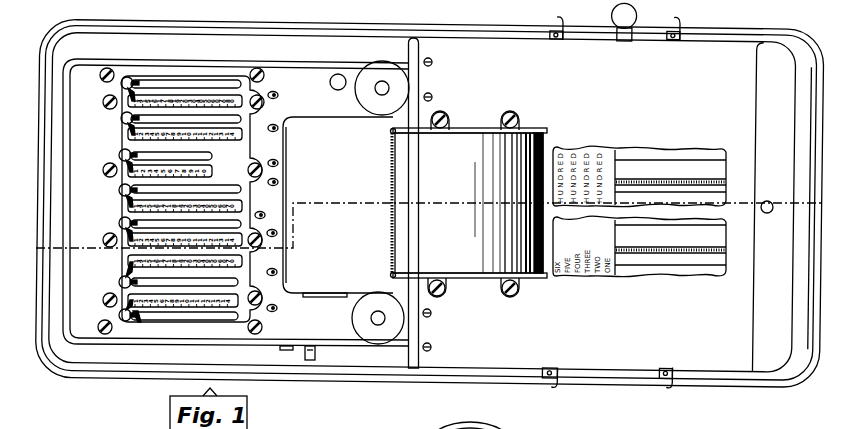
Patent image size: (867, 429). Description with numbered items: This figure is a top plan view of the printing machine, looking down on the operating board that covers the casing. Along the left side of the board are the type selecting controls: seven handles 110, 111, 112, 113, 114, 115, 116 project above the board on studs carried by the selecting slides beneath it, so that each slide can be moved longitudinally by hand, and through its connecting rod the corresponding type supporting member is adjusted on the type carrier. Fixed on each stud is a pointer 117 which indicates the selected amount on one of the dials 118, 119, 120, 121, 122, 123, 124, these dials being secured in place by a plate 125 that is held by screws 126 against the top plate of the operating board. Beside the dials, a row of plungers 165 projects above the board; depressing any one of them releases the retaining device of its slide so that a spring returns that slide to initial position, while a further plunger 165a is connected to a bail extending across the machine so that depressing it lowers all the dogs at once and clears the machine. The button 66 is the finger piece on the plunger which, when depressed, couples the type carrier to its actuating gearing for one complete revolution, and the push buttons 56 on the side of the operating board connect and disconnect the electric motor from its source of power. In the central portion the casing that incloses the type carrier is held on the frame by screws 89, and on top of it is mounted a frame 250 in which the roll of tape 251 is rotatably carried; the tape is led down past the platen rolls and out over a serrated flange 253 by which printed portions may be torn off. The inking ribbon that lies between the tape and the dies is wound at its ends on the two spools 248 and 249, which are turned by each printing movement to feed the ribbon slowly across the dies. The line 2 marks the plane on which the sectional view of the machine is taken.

The section line 2- 2 is at (424, 224).
The push buttons 56 is at (287, 352).
The finger piece 66 is at (338, 73).
The screws 89 is at (433, 61).
The handle 110 is at (121, 84).
The handle 111 is at (121, 119).
The handle 112 is at (119, 154).
The handle 113 is at (119, 190).
The handle 114 is at (119, 222).
The handle 115 is at (119, 280).
The handle 116 is at (119, 315).
The pointer 117 is at (139, 322).
The dial 118 is at (131, 101).
The dial 119 is at (131, 135).
The dial 120 is at (129, 172).
The dial 121 is at (129, 207).
The dial 122 is at (129, 241).
The dial 123 is at (129, 263).
The dial 124 is at (129, 300).
The plate 125 is at (166, 79).
The screws 126 is at (252, 90).
The plunger 165 is at (280, 95).
The plunger 165a is at (260, 211).
The spool 248 is at (384, 81).
The spool 249 is at (378, 325).
The frame 250 is at (519, 143).
The roll of tape 251 is at (505, 423).
The serrated flange 253 is at (390, 157).